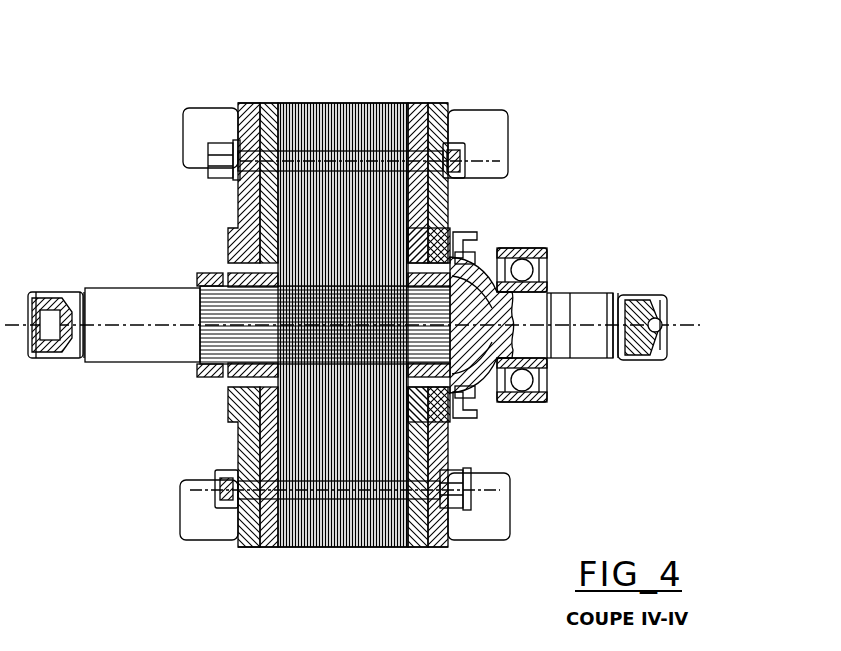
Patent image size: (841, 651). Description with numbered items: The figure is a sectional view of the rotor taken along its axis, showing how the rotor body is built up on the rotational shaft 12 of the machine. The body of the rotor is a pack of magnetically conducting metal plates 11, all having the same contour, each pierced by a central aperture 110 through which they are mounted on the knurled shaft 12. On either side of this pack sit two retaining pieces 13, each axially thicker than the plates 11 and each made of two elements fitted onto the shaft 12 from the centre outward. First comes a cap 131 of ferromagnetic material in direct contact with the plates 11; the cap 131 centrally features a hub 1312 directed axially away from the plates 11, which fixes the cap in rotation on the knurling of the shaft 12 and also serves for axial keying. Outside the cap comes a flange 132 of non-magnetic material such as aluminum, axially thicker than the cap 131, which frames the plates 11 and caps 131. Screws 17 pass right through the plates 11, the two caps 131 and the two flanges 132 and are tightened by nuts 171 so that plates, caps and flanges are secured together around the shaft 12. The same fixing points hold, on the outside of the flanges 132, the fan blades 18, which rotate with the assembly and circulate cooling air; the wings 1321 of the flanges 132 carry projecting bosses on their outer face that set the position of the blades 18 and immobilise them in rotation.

The retaining piece 13 is at (394, 277).
The flange 132 is at (250, 122).
The cap 131 is at (266, 103).
The magnetically conducting metal plates 11 is at (303, 122).
The screws 17 is at (338, 160).
The nuts 171 is at (226, 160).
The fan blades 18 is at (193, 132).
The wings of the flanges 1321 is at (435, 206).
The central aperture 110 is at (445, 229).
The rotational shaft 12 is at (502, 250).
The hub 1312 is at (438, 397).